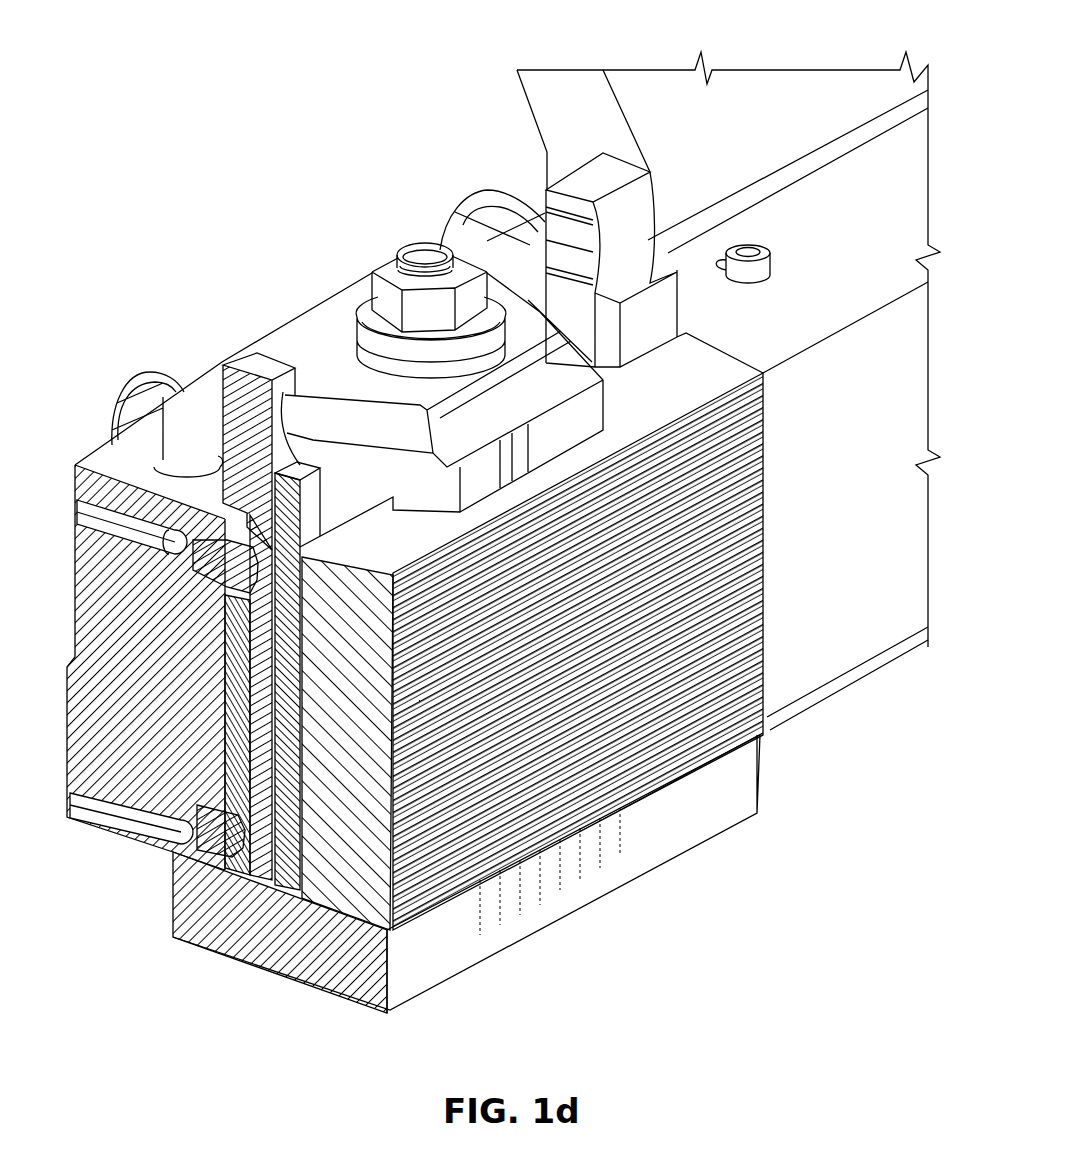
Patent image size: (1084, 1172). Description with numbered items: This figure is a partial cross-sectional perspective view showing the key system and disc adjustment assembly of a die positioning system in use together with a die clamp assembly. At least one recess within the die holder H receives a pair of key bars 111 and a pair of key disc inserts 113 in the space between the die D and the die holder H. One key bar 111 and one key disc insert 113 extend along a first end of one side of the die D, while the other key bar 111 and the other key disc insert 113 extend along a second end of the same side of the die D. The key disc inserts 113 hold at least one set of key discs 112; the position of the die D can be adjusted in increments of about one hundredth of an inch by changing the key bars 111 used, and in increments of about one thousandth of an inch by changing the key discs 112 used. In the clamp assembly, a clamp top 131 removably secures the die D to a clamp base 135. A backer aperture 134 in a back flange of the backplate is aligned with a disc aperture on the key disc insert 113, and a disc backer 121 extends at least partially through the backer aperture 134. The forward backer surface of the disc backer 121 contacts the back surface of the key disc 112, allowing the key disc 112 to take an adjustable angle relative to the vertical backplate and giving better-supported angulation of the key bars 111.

The key bar 111 is at (657, 272).
The key disc 112 is at (243, 870).
The key disc insert 113 is at (570, 185).
The disc backer 121 is at (228, 818).
The clamp top 131 is at (305, 345).
The backer aperture 134 is at (243, 866).
The clamp base 135 is at (653, 843).
The die holder H is at (112, 467).
The die D is at (770, 650).